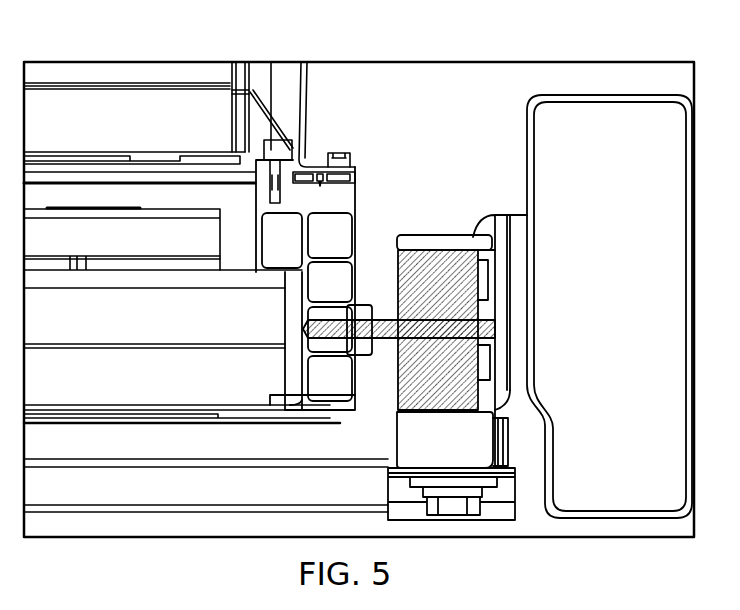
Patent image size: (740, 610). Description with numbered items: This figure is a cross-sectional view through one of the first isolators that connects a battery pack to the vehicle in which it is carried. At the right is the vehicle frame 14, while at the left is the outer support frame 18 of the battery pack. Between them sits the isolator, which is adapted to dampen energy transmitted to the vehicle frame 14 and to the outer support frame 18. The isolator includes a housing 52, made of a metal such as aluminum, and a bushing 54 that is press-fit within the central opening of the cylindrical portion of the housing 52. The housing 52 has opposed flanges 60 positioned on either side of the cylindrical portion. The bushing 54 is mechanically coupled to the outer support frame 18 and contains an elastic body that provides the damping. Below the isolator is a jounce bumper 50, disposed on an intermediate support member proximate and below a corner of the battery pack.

The vehicle frame 14 is at (620, 97).
The outer support frame 18 is at (345, 185).
The jounce bumper 50 is at (381, 330).
The housing 52 is at (447, 245).
The bushing 54 is at (470, 280).
The opposed flanges 60 is at (484, 438).